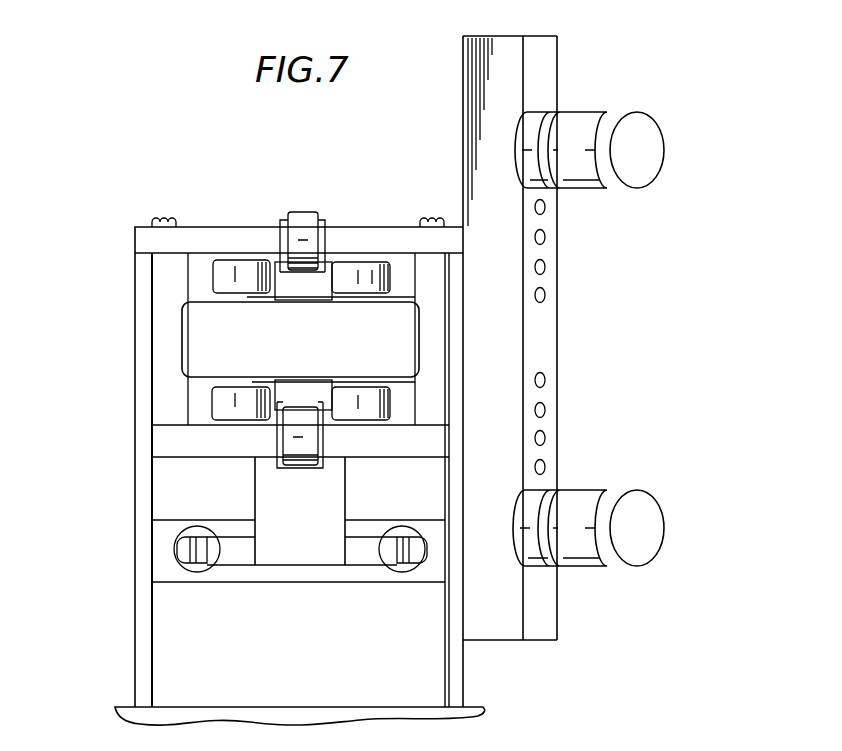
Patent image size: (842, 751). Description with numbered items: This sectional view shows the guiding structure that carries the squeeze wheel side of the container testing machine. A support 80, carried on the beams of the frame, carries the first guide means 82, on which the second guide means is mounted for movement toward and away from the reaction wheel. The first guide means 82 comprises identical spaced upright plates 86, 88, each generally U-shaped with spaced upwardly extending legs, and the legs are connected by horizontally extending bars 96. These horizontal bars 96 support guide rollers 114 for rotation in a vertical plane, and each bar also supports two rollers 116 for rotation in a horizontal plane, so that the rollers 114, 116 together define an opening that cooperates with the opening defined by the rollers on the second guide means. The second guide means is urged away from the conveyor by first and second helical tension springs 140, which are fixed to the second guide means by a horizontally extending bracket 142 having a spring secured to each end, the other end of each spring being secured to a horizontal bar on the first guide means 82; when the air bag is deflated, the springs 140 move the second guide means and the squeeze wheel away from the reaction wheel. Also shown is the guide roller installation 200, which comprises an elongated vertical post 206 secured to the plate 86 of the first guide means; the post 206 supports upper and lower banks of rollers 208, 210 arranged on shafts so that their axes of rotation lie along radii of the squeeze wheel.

The support 80 is at (462, 717).
The first guide means 82 is at (100, 565).
The upright plate 86 is at (456, 682).
The upright plate 88 is at (142, 627).
The horizontally extending bars 96 is at (345, 230).
The guide rollers 114 is at (297, 215).
The rollers 116 is at (223, 262).
The helical tension springs 140 is at (195, 572).
The horizontally extending bracket 142 is at (243, 558).
The guide roller installation 200 is at (580, 88).
The vertical post 206 is at (548, 52).
The upper bank of rollers 208 is at (660, 143).
The lower bank of rollers 210 is at (650, 510).